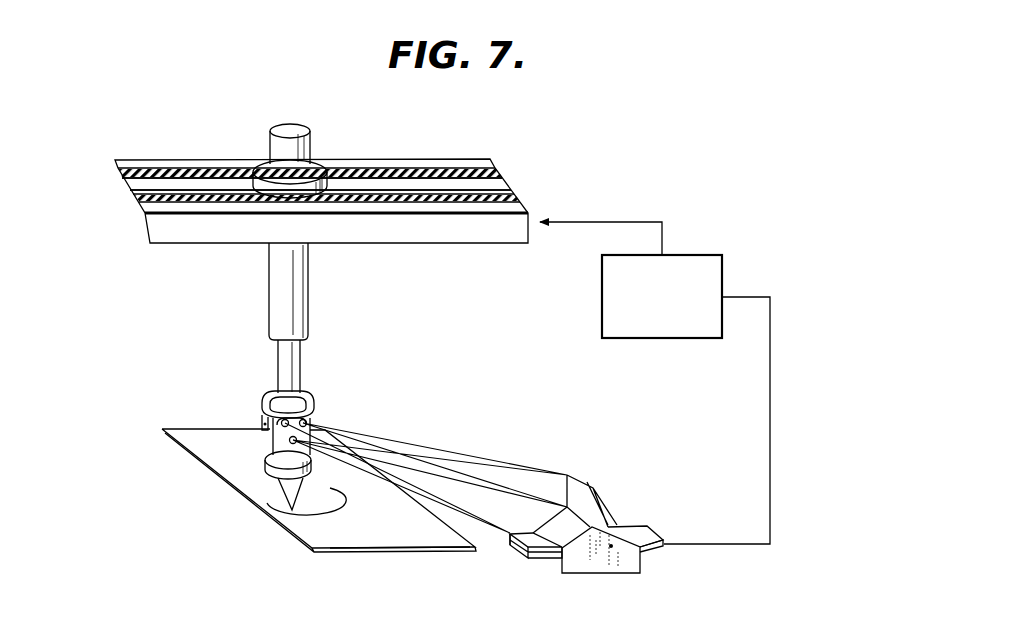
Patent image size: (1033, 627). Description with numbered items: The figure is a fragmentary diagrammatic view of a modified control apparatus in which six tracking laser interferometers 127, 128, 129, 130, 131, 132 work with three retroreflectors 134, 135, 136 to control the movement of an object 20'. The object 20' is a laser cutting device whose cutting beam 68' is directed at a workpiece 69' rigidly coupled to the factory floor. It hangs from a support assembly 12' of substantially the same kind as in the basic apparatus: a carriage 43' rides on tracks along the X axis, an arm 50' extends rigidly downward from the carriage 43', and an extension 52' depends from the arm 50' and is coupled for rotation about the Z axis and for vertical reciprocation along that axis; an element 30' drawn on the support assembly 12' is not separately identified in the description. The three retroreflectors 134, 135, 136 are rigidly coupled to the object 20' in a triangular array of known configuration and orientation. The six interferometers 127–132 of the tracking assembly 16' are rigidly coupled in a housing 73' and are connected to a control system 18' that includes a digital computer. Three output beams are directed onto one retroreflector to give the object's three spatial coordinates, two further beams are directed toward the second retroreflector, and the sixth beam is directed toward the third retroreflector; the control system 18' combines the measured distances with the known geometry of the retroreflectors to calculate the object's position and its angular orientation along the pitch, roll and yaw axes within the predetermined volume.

The support assembly 12' is at (342, 173).
The carriage track 30' is at (316, 148).
The carriage 43' is at (261, 161).
The arm 50' is at (326, 291).
The extension 52' is at (323, 365).
The retroreflector 135 is at (270, 398).
The retroreflector 134 is at (307, 422).
The retroreflector 136 is at (289, 441).
The object 20' is at (316, 490).
The cutting beam 68' is at (274, 513).
The workpiece 69' is at (400, 570).
The control system 18' is at (664, 376).
The tracking assembly 16' is at (602, 508).
The housing 73' is at (625, 564).
The tracking laser interferometer 127 is at (648, 533).
The tracking laser interferometer 130 is at (660, 552).
The tracking laser interferometer 131 is at (585, 480).
The tracking laser interferometer 128 is at (570, 476).
The tracking laser interferometer 129 is at (545, 560).
The tracking laser interferometer 132 is at (514, 548).